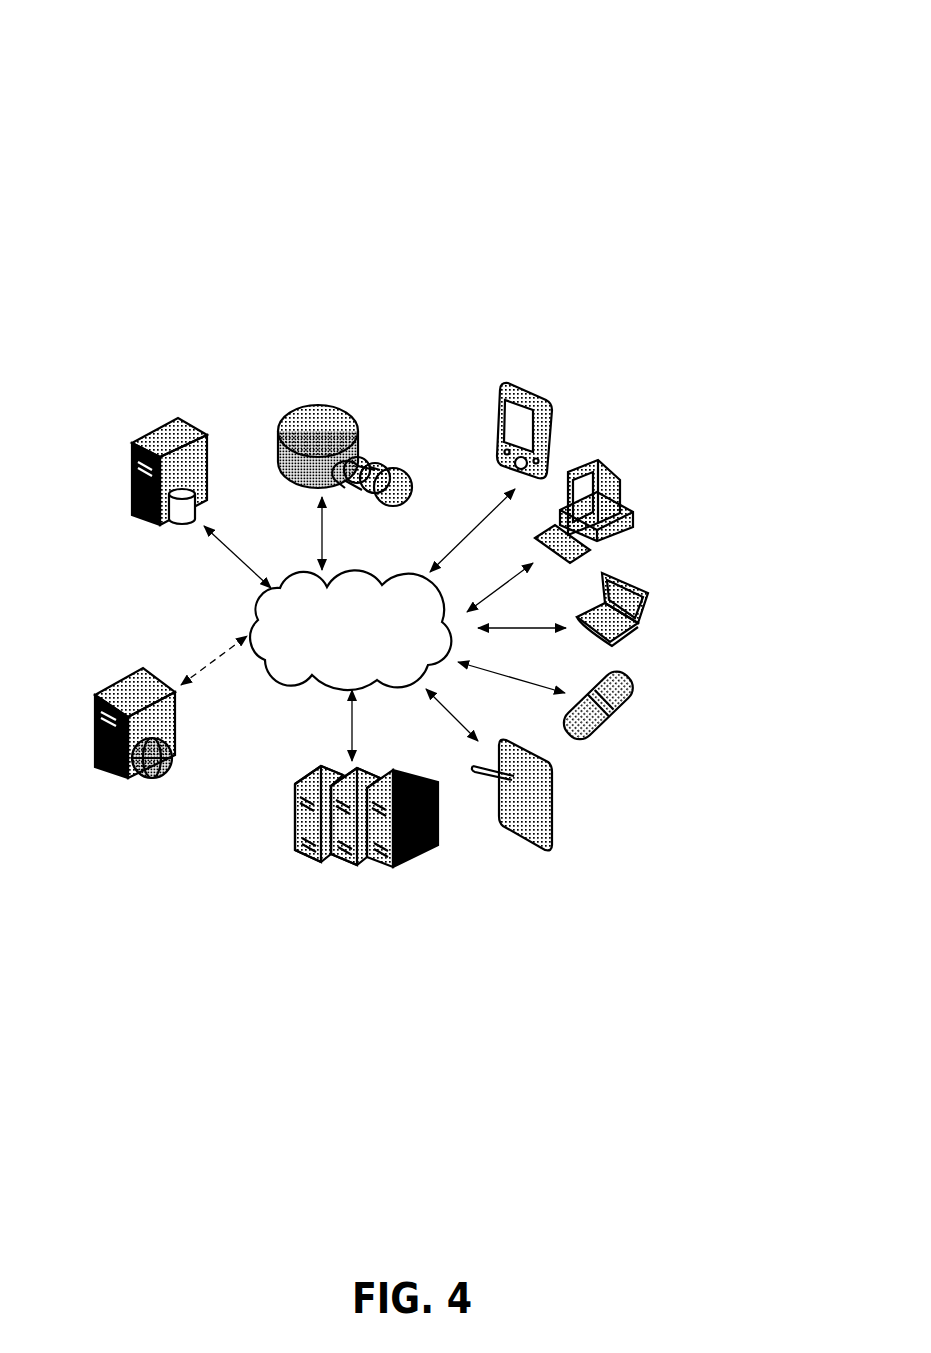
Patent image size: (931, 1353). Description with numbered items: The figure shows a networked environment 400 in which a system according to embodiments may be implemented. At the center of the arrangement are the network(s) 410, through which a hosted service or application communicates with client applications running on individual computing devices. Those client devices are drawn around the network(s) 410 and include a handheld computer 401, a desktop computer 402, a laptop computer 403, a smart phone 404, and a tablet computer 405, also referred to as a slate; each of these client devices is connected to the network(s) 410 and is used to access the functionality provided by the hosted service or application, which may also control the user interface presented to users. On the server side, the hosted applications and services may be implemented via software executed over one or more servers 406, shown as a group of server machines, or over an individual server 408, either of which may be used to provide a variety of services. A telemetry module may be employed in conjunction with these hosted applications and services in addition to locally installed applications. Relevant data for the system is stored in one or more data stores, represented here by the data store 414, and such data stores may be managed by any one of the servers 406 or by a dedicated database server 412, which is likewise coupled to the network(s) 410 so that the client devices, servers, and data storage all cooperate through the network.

The networked environment 400 is at (676, 24).
The handheld computer 401 is at (554, 388).
The desktop computer 402 is at (632, 476).
The laptop computer 403 is at (651, 574).
The smart phone 404 is at (624, 678).
The tablet computer 405 is at (562, 779).
The servers 406 is at (321, 763).
The individual server 408 is at (117, 675).
The network(s) 410 is at (359, 558).
The database server 412 is at (180, 536).
The data store 414 is at (335, 385).